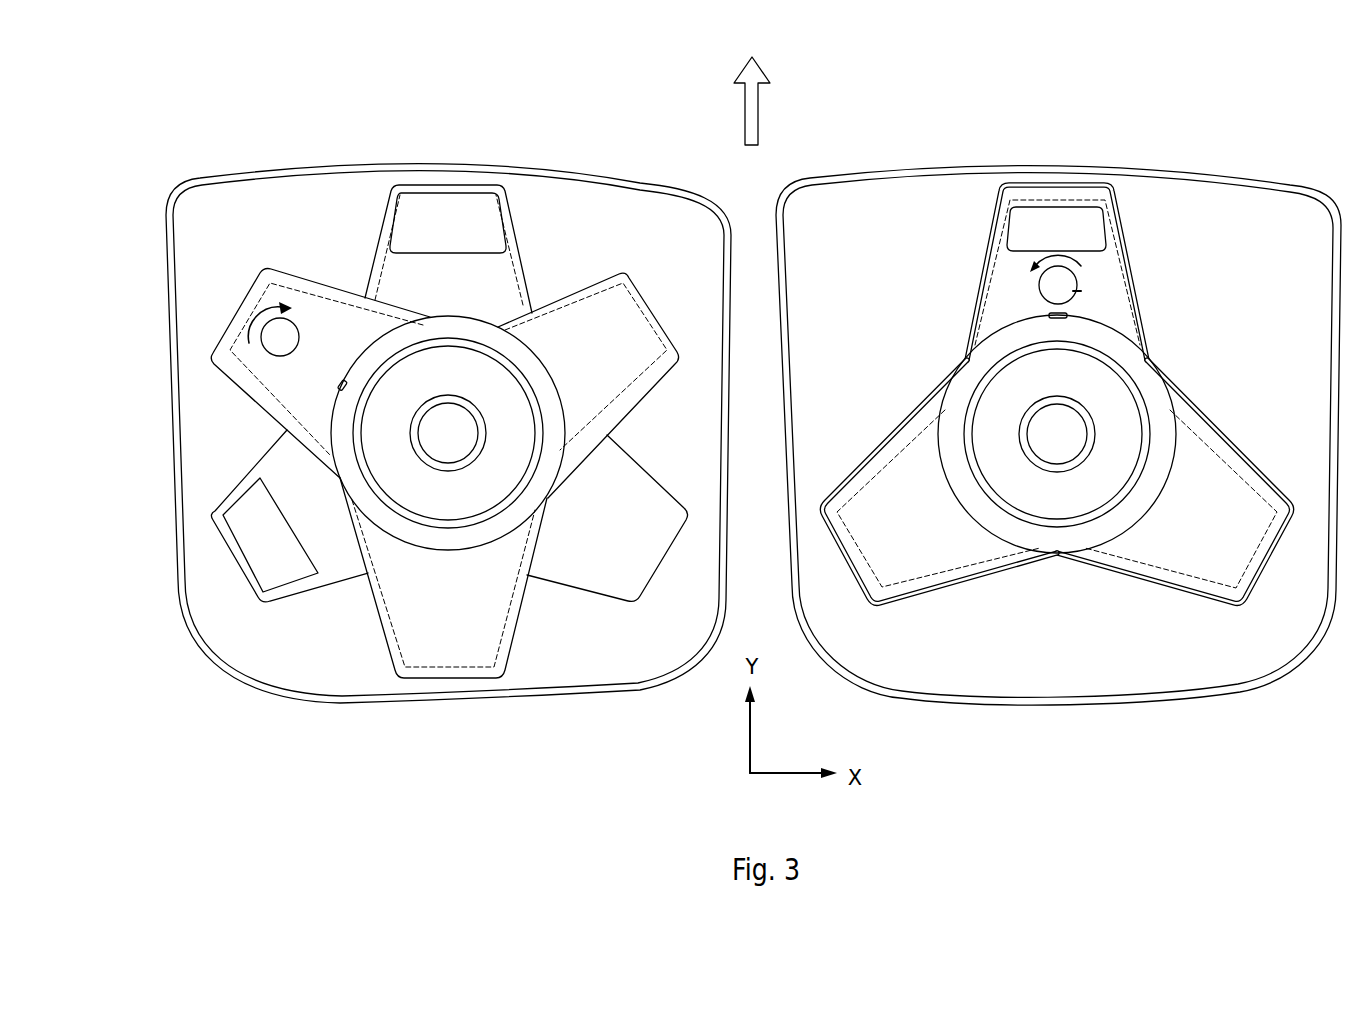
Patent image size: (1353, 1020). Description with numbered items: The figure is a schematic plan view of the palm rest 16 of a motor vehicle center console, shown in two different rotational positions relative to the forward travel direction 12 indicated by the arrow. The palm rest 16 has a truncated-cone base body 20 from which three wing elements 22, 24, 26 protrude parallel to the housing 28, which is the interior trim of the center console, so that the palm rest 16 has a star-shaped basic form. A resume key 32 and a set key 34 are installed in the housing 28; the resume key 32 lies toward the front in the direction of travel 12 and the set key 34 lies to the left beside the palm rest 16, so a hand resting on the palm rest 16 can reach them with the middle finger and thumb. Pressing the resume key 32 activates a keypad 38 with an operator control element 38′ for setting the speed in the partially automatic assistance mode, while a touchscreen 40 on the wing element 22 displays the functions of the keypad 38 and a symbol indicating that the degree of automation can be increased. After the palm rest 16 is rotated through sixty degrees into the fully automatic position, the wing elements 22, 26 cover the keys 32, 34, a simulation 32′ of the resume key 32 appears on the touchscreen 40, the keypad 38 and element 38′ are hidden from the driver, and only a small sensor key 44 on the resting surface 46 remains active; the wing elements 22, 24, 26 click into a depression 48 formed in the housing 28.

The forward travel direction 12 is at (758, 108).
The palm rest 16 is at (567, 243).
The base body 20 is at (512, 418).
The wing element 22 is at (240, 300).
The wing element 24 is at (625, 305).
The wing element 26 is at (446, 668).
The housing 28 is at (572, 672).
The resume key 32 is at (446, 200).
The simulation of the resume key 32′ is at (1053, 196).
The set key 34 is at (240, 535).
The keypad 38 is at (318, 404).
The operator control element 38′ is at (344, 373).
The touchscreen 40 is at (312, 303).
The sensor key 44 is at (443, 452).
The resting surface 46 is at (458, 388).
The depression 48 is at (623, 533).